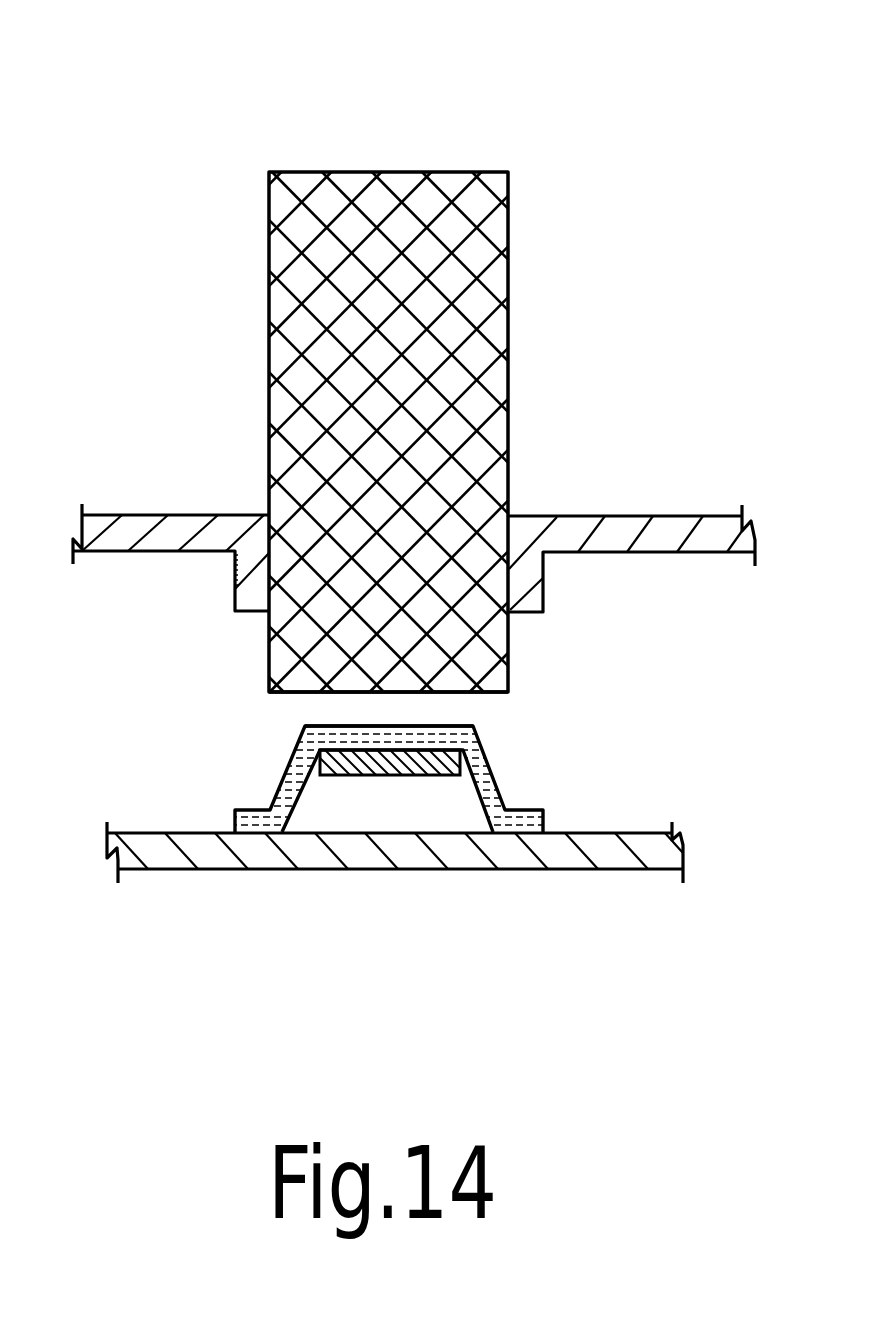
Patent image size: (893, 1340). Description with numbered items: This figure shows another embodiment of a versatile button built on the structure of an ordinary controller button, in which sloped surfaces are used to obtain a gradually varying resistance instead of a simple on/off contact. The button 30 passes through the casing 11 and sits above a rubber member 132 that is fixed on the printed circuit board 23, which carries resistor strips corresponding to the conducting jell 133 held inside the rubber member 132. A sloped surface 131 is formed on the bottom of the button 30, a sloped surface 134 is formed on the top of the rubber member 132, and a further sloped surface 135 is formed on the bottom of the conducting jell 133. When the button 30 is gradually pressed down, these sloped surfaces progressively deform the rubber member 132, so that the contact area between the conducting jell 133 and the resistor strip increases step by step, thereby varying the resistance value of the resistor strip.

The button 30 is at (398, 226).
The casing 11 is at (673, 531).
The sloped surface 131 is at (483, 668).
The rubber member 132 is at (498, 792).
The conducting jell 133 is at (447, 777).
The sloped surface 134 is at (305, 697).
The sloped surface 135 is at (328, 858).
The printed circuit board 23 is at (203, 843).